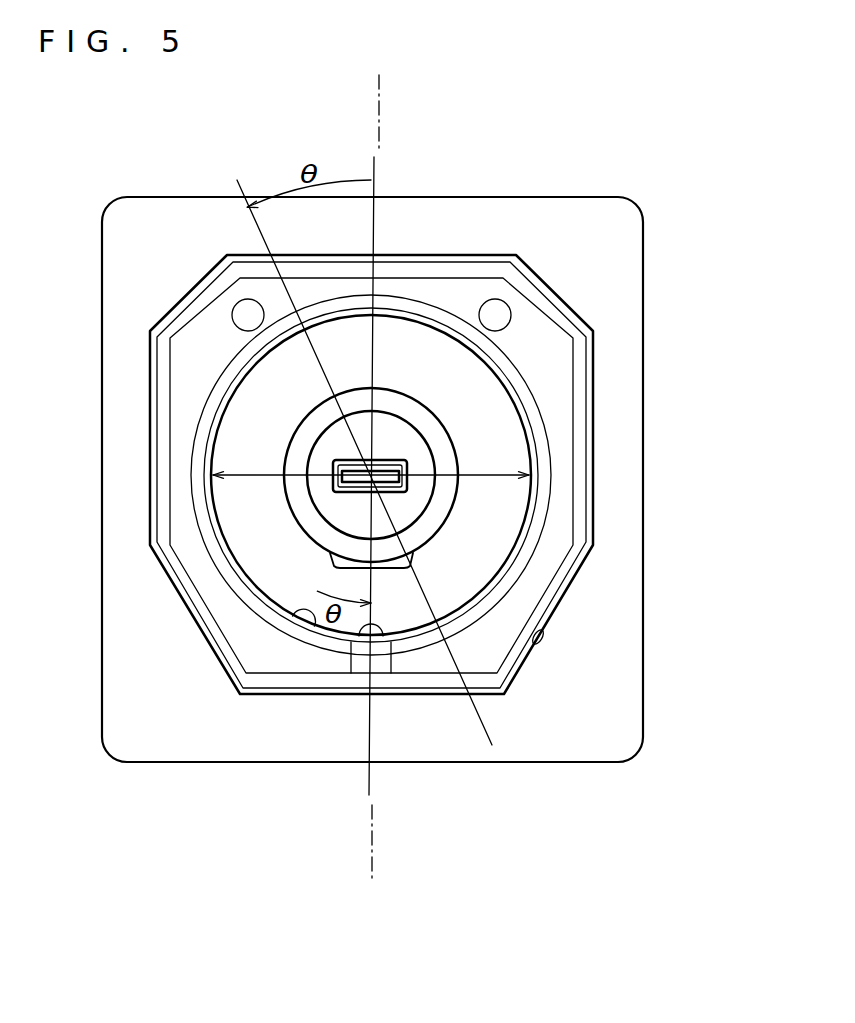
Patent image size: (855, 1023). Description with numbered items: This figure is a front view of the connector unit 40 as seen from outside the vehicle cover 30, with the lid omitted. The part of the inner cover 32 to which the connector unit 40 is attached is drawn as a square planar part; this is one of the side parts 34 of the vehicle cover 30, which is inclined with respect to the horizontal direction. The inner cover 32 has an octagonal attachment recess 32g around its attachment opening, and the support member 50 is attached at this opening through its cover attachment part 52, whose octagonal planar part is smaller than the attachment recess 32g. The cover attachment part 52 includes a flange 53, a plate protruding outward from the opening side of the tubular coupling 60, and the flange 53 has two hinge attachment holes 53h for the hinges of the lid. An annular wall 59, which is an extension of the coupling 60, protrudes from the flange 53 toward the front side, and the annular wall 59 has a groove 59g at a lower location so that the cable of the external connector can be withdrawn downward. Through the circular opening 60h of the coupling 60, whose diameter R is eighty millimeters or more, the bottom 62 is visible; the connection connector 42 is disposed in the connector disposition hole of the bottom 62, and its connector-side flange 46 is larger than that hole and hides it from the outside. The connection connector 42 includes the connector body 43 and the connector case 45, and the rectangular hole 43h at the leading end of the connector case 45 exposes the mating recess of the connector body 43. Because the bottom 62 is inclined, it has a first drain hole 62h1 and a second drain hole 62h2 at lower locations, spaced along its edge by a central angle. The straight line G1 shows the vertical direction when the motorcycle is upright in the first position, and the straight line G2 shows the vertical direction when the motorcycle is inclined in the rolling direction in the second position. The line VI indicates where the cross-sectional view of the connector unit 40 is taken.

The connector unit 40 is at (577, 152).
The vehicle cover 30 is at (442, 479).
The inner cover 32 is at (442, 479).
The side part 34 is at (645, 283).
The support member 50 is at (427, 454).
The cover attachment part 52 is at (595, 410).
The flange 53 is at (580, 372).
The hinge attachment hole 53h is at (243, 305).
The attachment recess 32g is at (547, 636).
The coupling 60 is at (296, 518).
The bottom 62 is at (371, 518).
The annular wall 59 is at (527, 515).
The opening 60h is at (228, 554).
The first drain hole 62h1 is at (380, 630).
The second drain hole 62h2 is at (298, 610).
The groove 59g is at (380, 668).
The connection connector 42 is at (399, 458).
The connector-side flange 46 is at (395, 400).
The connector case 45 is at (443, 526).
The connector body 43 is at (424, 455).
The hole 43h is at (395, 474).
The diameter R is at (249, 473).
The straight line G1 is at (375, 232).
The straight line G2 is at (261, 233).
The line VI- VI is at (380, 83).